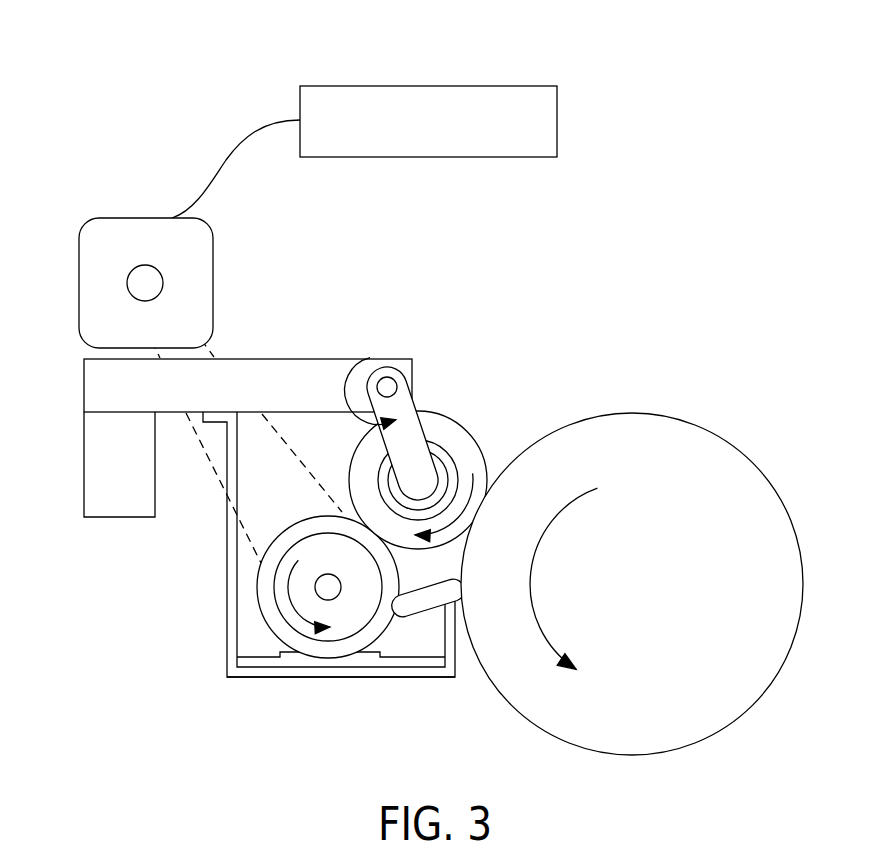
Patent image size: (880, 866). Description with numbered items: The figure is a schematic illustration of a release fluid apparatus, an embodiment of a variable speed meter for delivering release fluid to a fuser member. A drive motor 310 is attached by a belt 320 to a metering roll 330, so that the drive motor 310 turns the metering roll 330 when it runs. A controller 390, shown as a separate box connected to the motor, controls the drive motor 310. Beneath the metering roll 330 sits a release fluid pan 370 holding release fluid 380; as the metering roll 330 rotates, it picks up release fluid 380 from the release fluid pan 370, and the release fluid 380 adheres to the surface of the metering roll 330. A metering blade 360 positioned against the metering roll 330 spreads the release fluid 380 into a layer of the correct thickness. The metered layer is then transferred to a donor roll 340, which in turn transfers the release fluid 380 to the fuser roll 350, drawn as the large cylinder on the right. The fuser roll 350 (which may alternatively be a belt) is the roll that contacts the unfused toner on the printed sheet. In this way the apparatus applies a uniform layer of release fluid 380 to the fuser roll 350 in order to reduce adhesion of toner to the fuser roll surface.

The drive motor 310 is at (102, 218).
The belt 320 is at (213, 352).
The metering roll 330 is at (258, 585).
The donor roll 340 is at (452, 422).
The fuser roll 350 is at (720, 437).
The metering blade 360 is at (417, 616).
The release fluid pan 370 is at (355, 668).
The release fluid 380 is at (257, 662).
The controller 390 is at (440, 86).